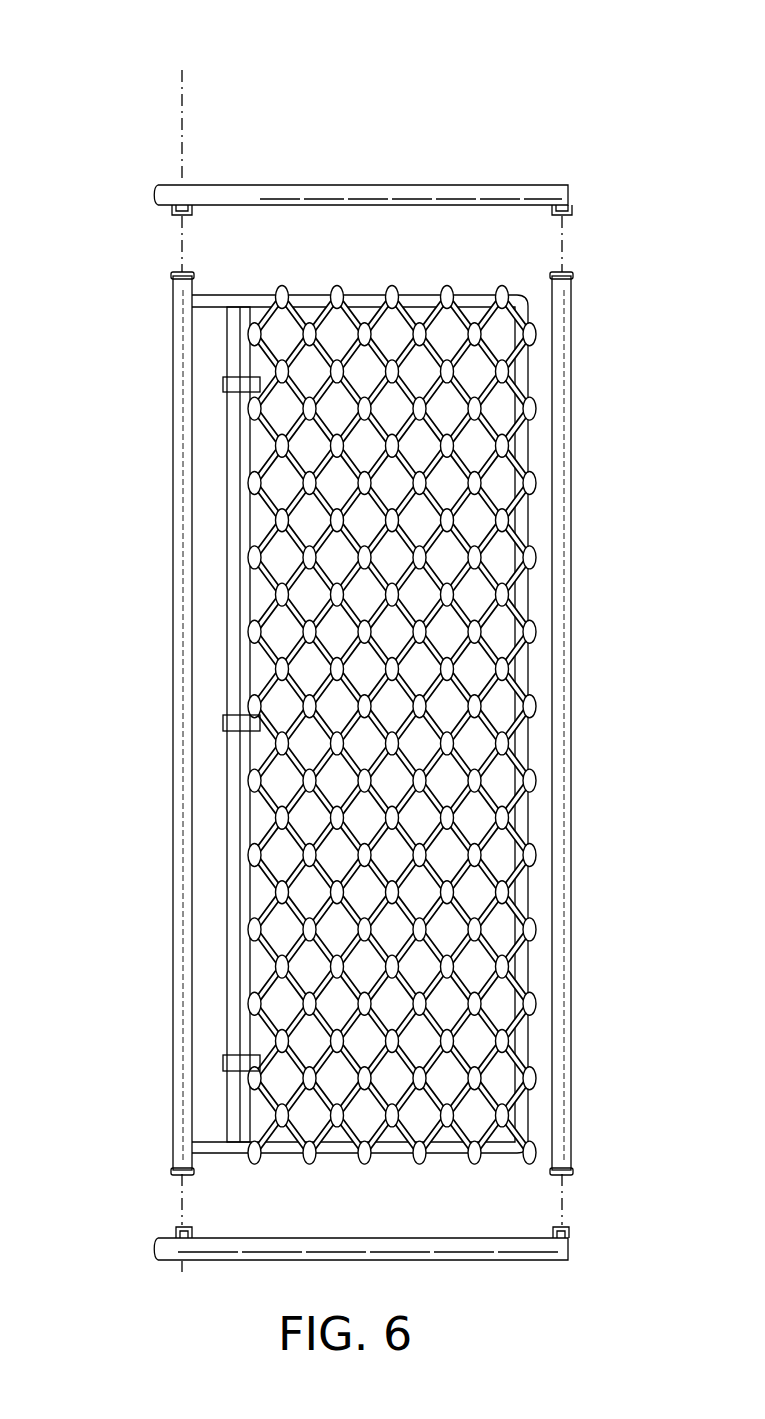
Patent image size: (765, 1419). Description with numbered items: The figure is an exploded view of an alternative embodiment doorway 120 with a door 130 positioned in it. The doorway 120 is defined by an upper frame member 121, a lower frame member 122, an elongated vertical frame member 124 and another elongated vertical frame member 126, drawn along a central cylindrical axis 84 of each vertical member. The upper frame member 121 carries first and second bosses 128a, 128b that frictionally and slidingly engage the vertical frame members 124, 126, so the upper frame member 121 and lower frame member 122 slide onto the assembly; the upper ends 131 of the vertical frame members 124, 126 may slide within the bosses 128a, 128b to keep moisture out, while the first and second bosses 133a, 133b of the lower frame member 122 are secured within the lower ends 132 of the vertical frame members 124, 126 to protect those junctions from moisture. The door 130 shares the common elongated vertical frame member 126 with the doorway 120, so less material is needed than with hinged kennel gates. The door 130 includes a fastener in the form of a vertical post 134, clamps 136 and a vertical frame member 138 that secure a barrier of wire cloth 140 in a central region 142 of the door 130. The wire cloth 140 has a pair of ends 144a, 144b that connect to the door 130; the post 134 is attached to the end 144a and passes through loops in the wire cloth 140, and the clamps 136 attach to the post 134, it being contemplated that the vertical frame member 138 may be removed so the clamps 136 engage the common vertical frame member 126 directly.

The doorway 120 is at (546, 106).
The central cylindrical axis 84 is at (185, 100).
The upper frame member 121 is at (350, 188).
The lower frame member 122 is at (530, 1258).
The elongated vertical frame member 124 is at (564, 680).
The elongated vertical frame member 126 is at (175, 342).
The first boss 128a is at (174, 213).
The second boss 128b is at (574, 211).
The door 130 is at (430, 297).
The upper ends 131 is at (172, 275).
The lower ends 132 is at (176, 1170).
The first boss 133a is at (178, 1231).
The second boss 133b is at (572, 1242).
The vertical post 134 is at (255, 665).
The clamps 136 is at (224, 386).
The vertical frame member 138 is at (236, 562).
The wire cloth 140 is at (381, 725).
The central region 142 is at (425, 820).
The end 144a is at (250, 490).
The end 144b is at (530, 480).